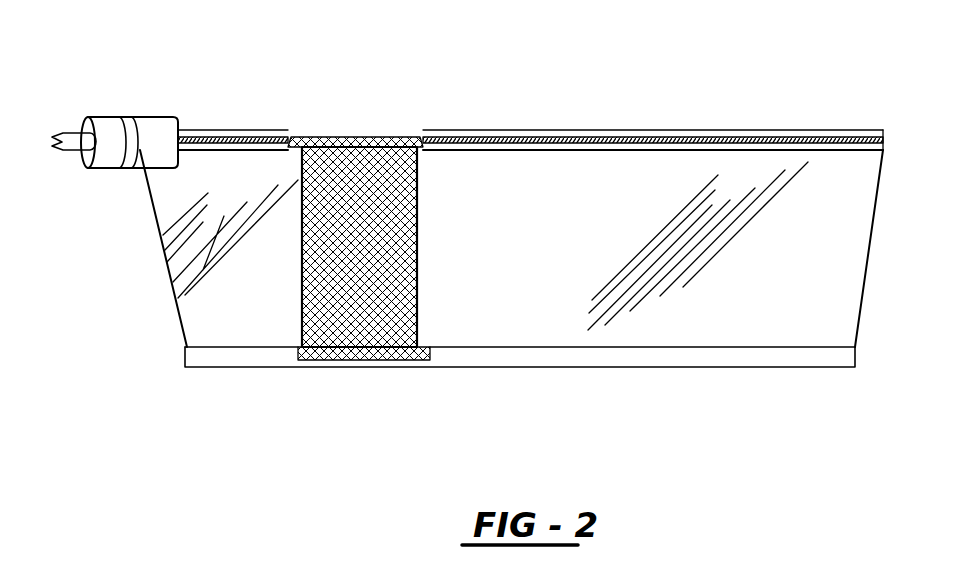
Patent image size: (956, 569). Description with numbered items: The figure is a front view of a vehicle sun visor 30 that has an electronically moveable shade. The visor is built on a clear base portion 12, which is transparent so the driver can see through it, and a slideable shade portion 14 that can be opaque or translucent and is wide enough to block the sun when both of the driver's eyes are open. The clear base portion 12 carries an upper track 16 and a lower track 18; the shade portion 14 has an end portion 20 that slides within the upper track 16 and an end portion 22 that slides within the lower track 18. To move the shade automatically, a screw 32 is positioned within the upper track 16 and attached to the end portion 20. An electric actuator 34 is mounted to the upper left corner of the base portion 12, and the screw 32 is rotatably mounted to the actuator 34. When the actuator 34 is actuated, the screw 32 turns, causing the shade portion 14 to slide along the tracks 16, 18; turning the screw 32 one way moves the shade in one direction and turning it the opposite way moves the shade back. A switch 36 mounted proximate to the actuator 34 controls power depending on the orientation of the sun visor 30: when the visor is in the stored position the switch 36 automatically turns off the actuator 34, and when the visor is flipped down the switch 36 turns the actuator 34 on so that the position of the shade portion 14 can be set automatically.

The clear base portion 12 is at (833, 273).
The slideable shade portion 14 is at (340, 287).
The upper track 16 is at (541, 106).
The lower track 18 is at (815, 357).
The end portion 20 is at (363, 135).
The end portion 22 is at (342, 352).
The vehicle sun visor 30 is at (664, 77).
The screw 32 is at (693, 142).
The electric actuator 34 is at (145, 122).
The switch 36 is at (102, 158).